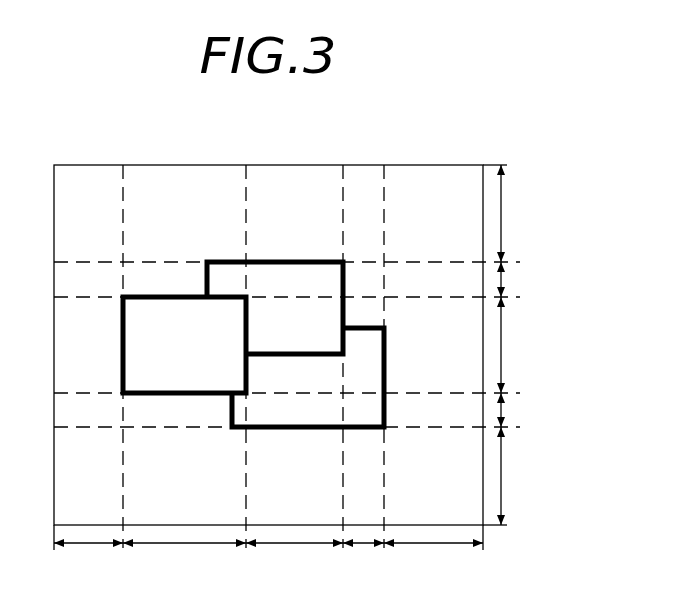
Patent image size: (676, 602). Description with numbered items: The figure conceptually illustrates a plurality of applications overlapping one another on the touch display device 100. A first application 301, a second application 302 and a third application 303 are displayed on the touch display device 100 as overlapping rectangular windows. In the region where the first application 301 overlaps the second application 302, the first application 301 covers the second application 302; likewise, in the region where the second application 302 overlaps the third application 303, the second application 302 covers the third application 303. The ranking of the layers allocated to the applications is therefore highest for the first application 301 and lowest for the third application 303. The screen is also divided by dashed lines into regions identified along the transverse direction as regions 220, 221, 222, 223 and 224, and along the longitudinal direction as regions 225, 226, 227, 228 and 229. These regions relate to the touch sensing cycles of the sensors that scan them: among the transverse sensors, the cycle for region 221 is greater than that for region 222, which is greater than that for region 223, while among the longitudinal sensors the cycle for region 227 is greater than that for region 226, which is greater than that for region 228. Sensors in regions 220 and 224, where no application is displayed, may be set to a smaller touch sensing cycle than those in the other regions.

The touch display device 100 is at (318, 223).
The first application 301 is at (184, 345).
The second application 302 is at (275, 308).
The third application 303 is at (308, 377).
The region of identification number 220 is at (88, 562).
The region of identification number 221 is at (184, 373).
The region of identification number 222 is at (294, 373).
The region of identification number 223 is at (363, 373).
The region of identification number 224 is at (433, 373).
The region of identification number 225 is at (527, 213).
The region of identification number 226 is at (303, 279).
The region of identification number 227 is at (303, 345).
The region of identification number 228 is at (303, 410).
The region of identification number 229 is at (303, 476).